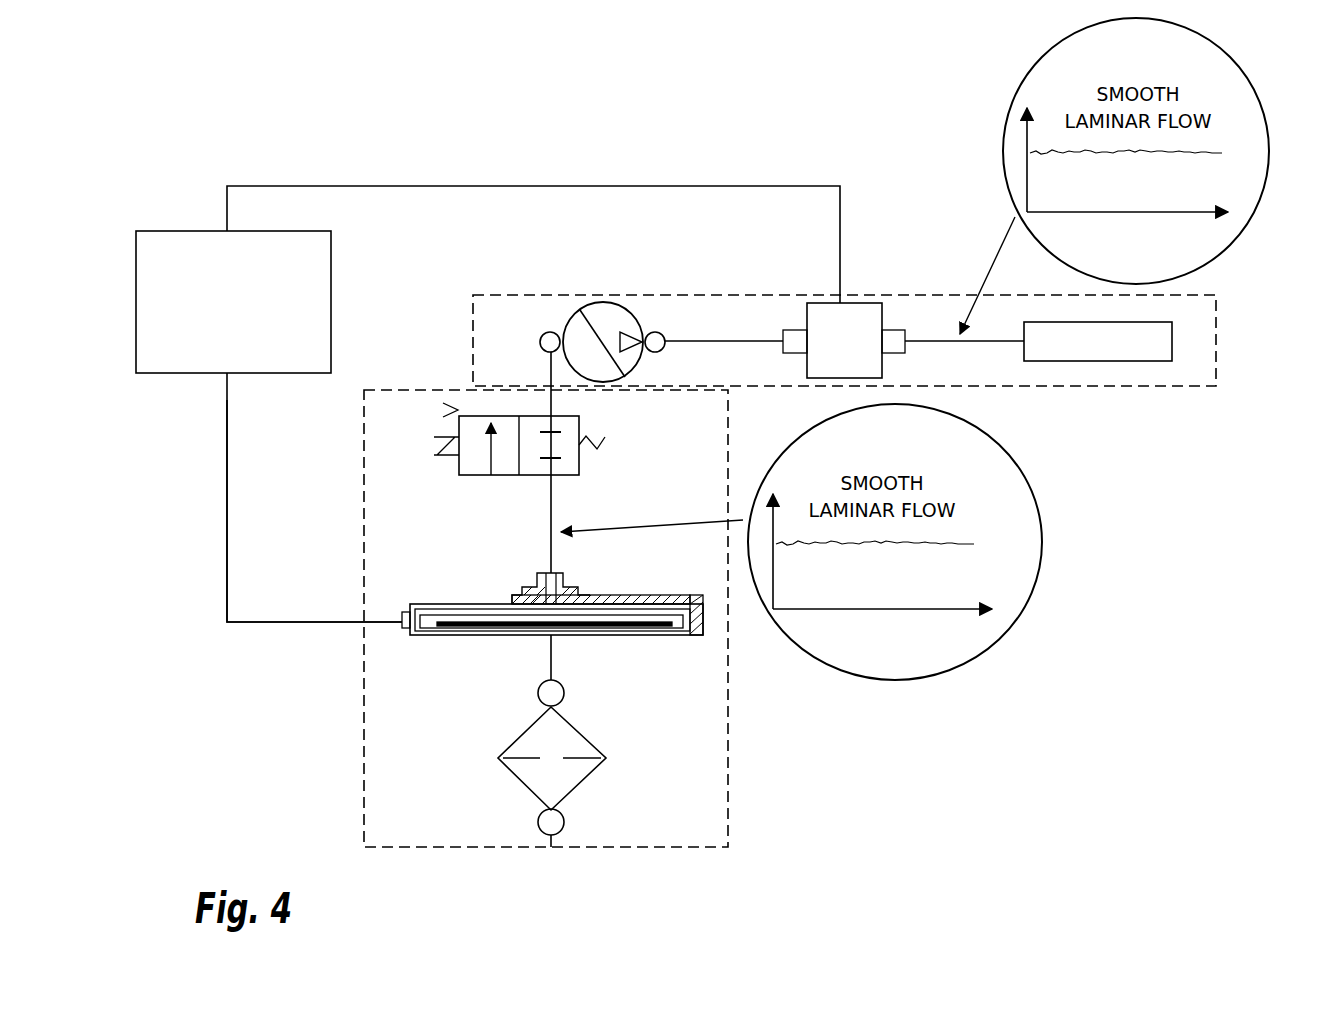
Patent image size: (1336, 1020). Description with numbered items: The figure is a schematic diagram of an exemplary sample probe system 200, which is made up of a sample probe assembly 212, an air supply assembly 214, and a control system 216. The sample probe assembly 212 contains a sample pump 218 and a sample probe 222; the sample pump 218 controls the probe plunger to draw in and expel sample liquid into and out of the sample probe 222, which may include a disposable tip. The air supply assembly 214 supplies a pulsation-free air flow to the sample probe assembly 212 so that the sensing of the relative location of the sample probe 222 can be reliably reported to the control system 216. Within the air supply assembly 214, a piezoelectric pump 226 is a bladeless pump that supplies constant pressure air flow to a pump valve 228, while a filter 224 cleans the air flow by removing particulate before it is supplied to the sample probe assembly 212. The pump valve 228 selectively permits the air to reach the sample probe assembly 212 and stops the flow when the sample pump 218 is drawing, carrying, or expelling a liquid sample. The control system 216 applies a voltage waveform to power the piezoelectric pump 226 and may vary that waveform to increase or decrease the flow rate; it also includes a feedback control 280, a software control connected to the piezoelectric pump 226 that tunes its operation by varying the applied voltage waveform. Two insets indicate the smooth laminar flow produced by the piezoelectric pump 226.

The sample probe system 200 is at (375, 119).
The sample probe assembly 212 is at (1216, 358).
The air supply assembly 214 is at (364, 482).
The control system 216 is at (233, 302).
The sample pump 218 is at (638, 312).
The sample probe 222 is at (1098, 341).
The filter 224 is at (498, 758).
The piezoelectric pump 226 is at (418, 600).
The pump valve 228 is at (496, 439).
The feedback control 280 is at (227, 550).